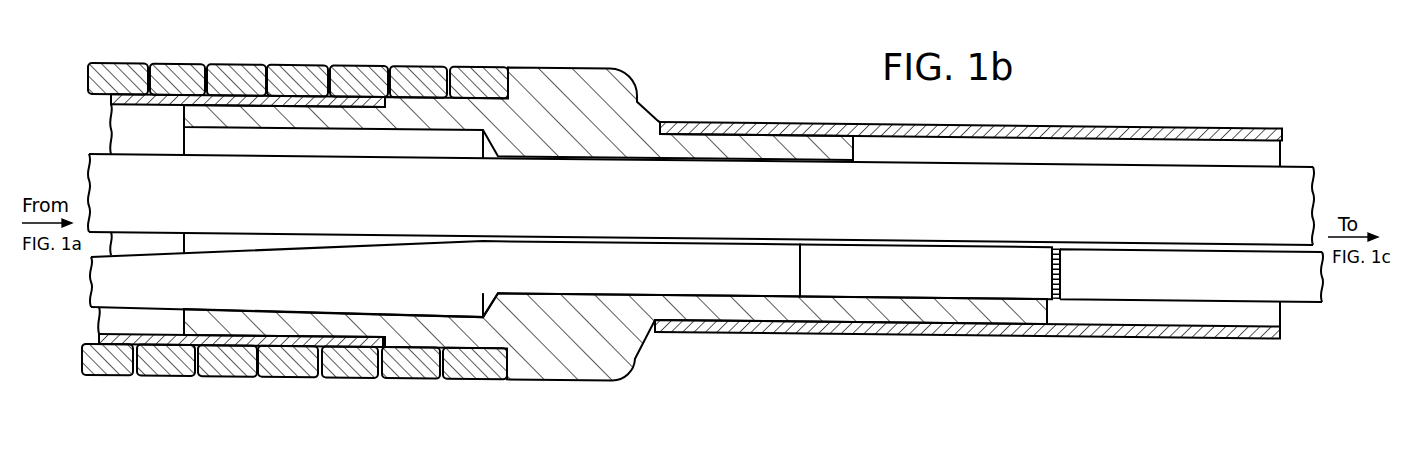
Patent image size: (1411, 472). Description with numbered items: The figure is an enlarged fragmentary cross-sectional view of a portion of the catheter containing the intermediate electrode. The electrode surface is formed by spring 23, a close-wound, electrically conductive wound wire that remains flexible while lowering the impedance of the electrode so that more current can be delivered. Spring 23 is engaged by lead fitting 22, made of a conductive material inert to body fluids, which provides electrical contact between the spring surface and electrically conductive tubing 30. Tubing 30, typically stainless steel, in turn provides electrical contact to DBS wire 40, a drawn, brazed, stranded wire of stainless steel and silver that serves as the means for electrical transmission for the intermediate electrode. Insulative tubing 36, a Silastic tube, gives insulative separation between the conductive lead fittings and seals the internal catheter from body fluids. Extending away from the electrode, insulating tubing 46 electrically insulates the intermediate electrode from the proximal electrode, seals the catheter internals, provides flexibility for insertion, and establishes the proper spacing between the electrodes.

The lead fitting 22 is at (605, 348).
The spring 23 is at (365, 373).
The electrically conductive tubing 30 is at (1008, 290).
The insulative tubing 36 is at (282, 343).
The DBS wire 40 is at (205, 292).
The tubing 46 is at (847, 332).